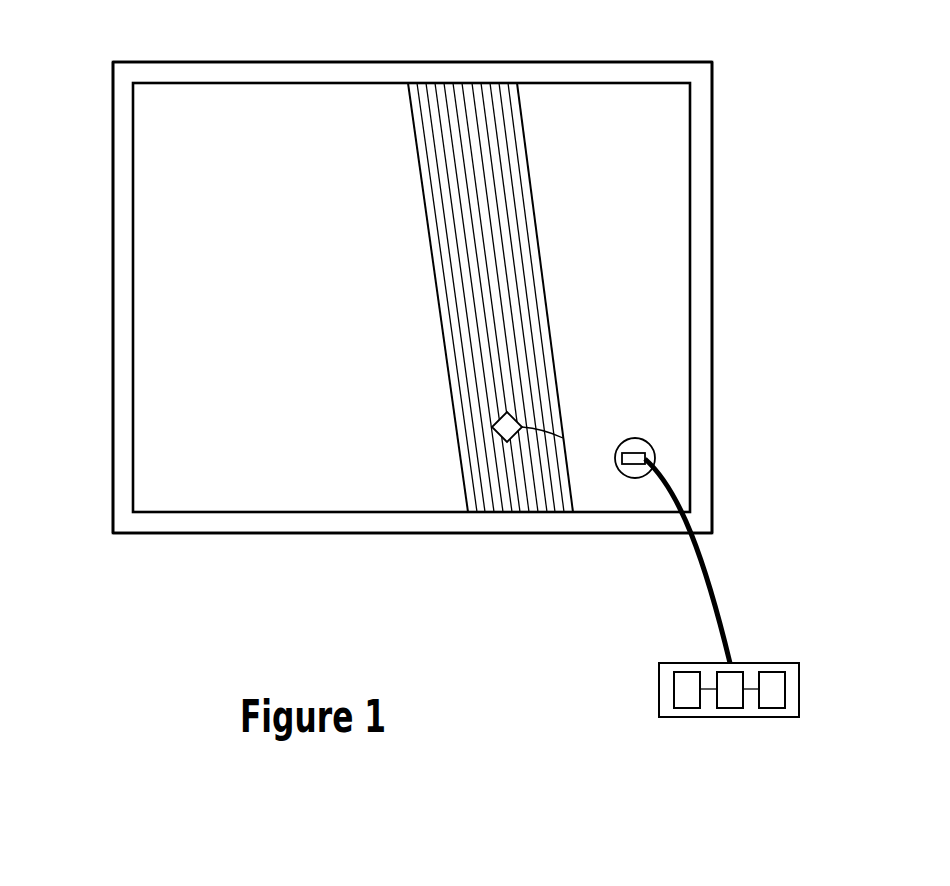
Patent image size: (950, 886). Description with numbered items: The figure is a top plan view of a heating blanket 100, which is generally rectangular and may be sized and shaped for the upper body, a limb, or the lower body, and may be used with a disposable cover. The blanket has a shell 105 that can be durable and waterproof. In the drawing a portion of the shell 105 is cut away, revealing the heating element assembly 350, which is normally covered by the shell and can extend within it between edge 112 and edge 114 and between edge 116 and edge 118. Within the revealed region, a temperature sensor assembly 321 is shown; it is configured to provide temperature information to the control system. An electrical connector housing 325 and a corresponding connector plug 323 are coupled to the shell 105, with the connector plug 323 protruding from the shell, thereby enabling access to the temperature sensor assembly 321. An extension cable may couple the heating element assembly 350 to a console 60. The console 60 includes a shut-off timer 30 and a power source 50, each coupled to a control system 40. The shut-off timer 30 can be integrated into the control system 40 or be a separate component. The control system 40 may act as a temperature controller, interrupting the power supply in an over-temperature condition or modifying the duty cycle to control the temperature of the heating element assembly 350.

The heating blanket 100 is at (296, 342).
The shell 105 is at (703, 398).
The edge 112 is at (113, 187).
The edge 114 is at (713, 200).
The edge 116 is at (538, 61).
The edge 118 is at (515, 535).
The heating element assembly 350 is at (520, 280).
The temperature sensor assembly 321 is at (495, 432).
The connector plug 323 is at (633, 452).
The electrical connector housing 325 is at (636, 478).
The shut-off timer 30 is at (674, 703).
The control system 40 is at (720, 708).
The power source 50 is at (785, 680).
The console 60 is at (728, 724).